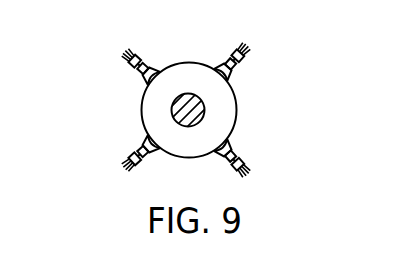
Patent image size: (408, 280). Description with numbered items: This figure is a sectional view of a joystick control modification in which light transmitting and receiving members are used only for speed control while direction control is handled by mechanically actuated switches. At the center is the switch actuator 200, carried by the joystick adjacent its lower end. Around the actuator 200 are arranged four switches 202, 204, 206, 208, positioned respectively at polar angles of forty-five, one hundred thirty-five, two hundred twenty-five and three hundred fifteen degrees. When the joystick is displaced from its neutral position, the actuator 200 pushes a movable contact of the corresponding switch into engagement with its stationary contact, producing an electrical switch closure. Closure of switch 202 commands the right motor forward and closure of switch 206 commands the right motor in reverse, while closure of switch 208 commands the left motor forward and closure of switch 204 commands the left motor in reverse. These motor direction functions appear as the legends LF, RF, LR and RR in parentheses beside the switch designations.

The switch actuator 200 is at (143, 106).
The switch 202 is at (245, 68).
The switch 204 is at (141, 57).
The switch 206 is at (138, 156).
The switch 208 is at (241, 156).